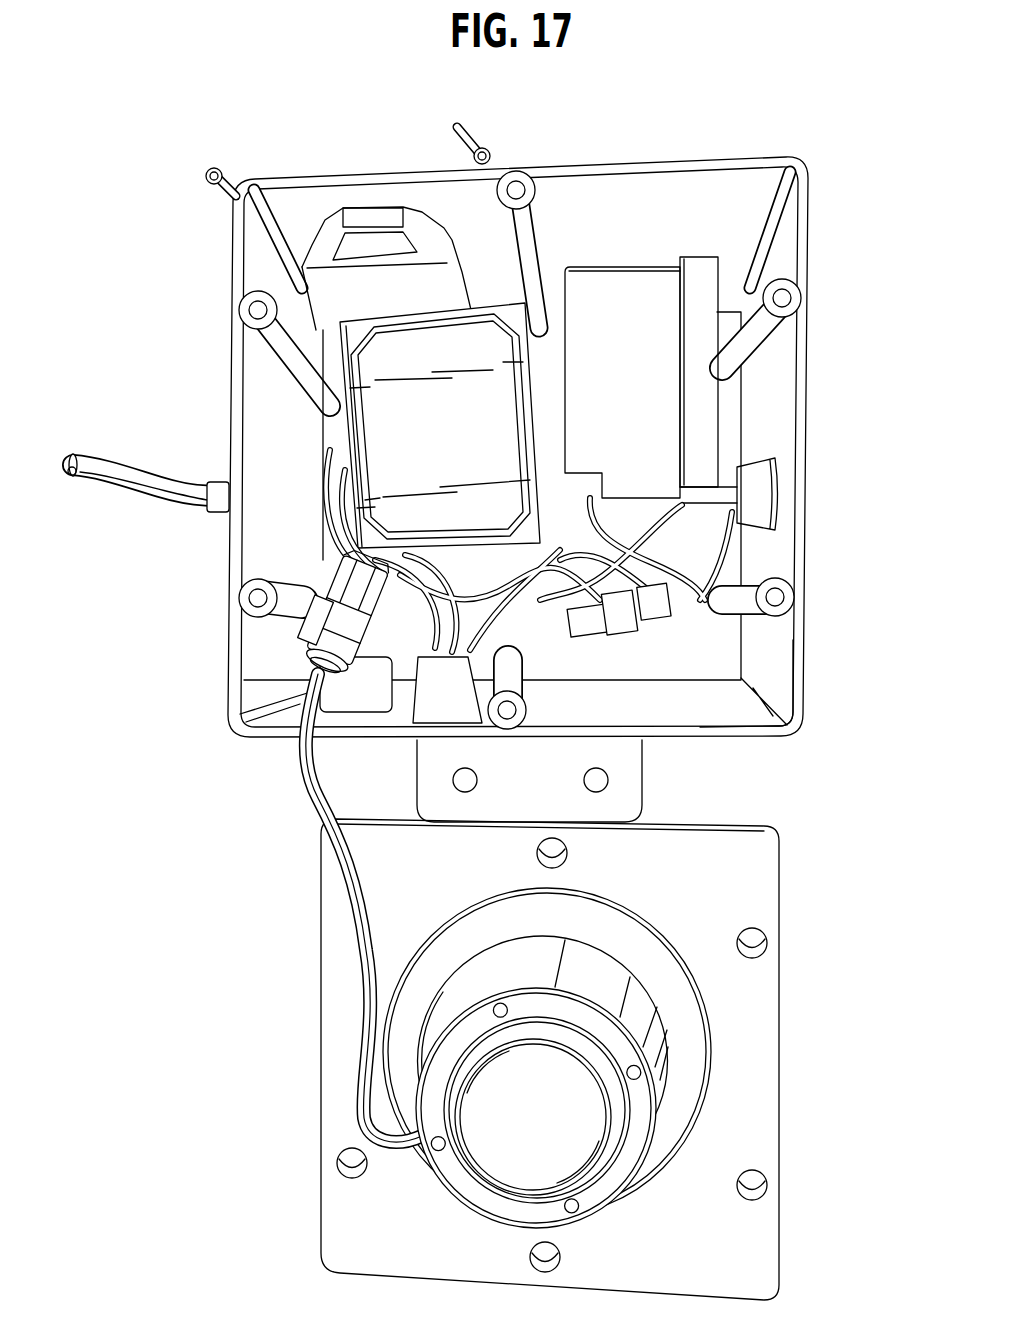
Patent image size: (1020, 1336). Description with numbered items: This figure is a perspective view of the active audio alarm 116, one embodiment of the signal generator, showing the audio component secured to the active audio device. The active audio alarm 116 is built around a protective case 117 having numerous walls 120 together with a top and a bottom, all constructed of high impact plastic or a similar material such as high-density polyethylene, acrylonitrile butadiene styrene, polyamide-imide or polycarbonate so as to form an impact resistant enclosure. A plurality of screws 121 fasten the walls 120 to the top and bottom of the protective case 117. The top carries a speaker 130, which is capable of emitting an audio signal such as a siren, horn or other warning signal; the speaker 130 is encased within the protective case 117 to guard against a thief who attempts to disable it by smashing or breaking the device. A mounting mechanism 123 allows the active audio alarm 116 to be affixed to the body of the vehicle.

The active audio alarm 116 is at (162, 182).
The protective case 117 is at (828, 393).
The walls 120 is at (818, 680).
The screws 121 is at (488, 140).
The mounting mechanism 123 is at (662, 786).
The speaker 130 is at (725, 1040).